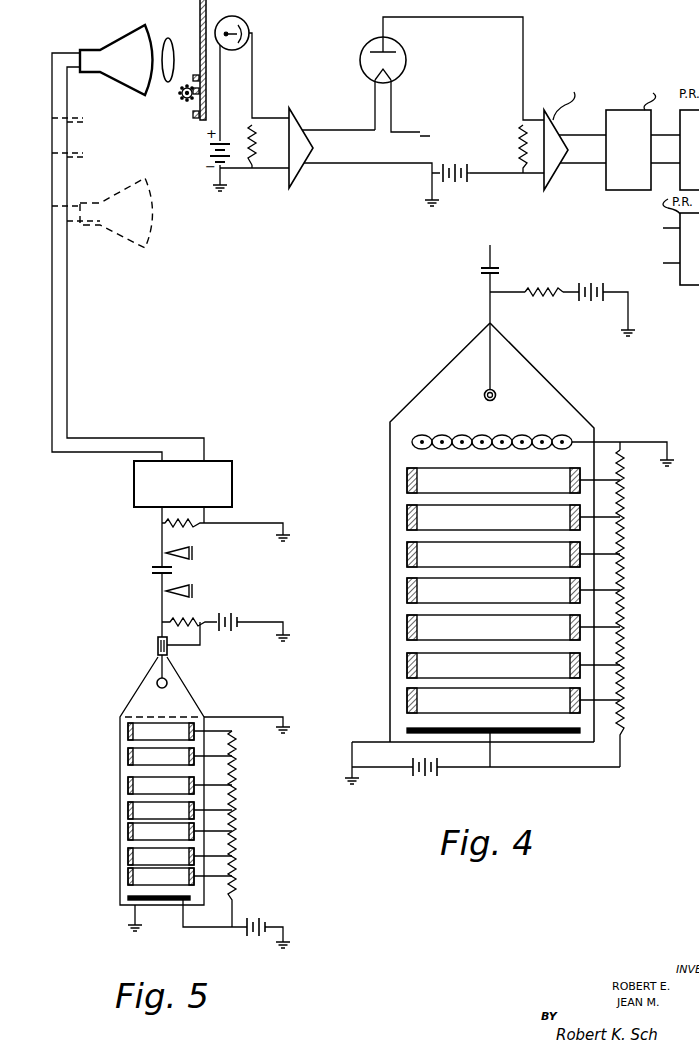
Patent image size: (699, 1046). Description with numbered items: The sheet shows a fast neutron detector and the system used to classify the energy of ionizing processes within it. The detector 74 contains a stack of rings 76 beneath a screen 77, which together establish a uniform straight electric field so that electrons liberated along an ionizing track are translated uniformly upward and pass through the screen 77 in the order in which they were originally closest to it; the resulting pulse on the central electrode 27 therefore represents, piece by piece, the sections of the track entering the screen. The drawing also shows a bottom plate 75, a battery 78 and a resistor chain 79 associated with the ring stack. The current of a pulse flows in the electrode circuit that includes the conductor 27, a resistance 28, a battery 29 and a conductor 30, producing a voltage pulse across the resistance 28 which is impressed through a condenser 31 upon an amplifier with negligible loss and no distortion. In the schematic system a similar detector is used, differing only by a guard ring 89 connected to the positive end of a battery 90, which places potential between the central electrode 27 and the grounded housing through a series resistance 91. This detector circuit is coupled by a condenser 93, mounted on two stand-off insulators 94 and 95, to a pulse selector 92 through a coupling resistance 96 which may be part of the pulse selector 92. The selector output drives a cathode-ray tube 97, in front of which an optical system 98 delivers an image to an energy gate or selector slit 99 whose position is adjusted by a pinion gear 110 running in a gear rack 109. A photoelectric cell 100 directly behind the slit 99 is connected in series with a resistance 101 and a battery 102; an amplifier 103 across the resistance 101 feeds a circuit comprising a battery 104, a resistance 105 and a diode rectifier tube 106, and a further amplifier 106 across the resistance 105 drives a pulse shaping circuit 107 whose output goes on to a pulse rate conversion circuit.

In FIG. 5, the central electrode 27 is at (156, 683).
In FIG. 4, the central electrode 27 is at (497, 398).
In FIG. 4, the resistance 28 is at (530, 298).
In FIG. 4, the battery 29 is at (578, 304).
In FIG. 4, the conductor 30 is at (631, 324).
In FIG. 4, the condenser 31 is at (487, 278).
In FIG. 4, the detector 74 is at (390, 506).
In FIG. 4, the bottom plate electrode 75 is at (567, 735).
In FIG. 4, the rings 76 is at (407, 628).
In FIG. 4, the screen 77 is at (570, 438).
In FIG. 4, the battery 78 is at (416, 777).
In FIG. 4, the voltage divider resistor chain 79 is at (627, 565).
In FIG. 5, the guard ring 89 is at (120, 647).
In FIG. 5, the battery 90 is at (230, 612).
In FIG. 5, the resistance 91 is at (173, 619).
In FIG. 5, the pulse selector 92 is at (233, 491).
In FIG. 5, the condenser 93 is at (152, 566).
In FIG. 5, the stand-off insulator 94 is at (196, 587).
In FIG. 5, the stand-off insulator 95 is at (196, 548).
In FIG. 5, the coupling resistance 96 is at (176, 525).
In FIG. 5, the cathode-ray tube 97 is at (100, 48).
In FIG. 5, the optical system 98 is at (172, 40).
In FIG. 5, the selector slit 99 is at (205, 12).
In FIG. 5, the photoelectric cell 100 is at (242, 16).
In FIG. 5, the resistance 101 is at (256, 166).
In FIG. 5, the battery 102 is at (210, 147).
In FIG. 5, the amplifier 103 is at (294, 182).
In FIG. 5, the battery 104 is at (458, 181).
In FIG. 5, the resistance 105 is at (519, 167).
In FIG. 5, the diode rectifier tube 106 is at (372, 40).
In FIG. 5, the pulse shaping circuit 107 is at (613, 190).
In FIG. 5, the gear rack 109 is at (193, 116).
In FIG. 5, the pinion gear 110 is at (181, 95).